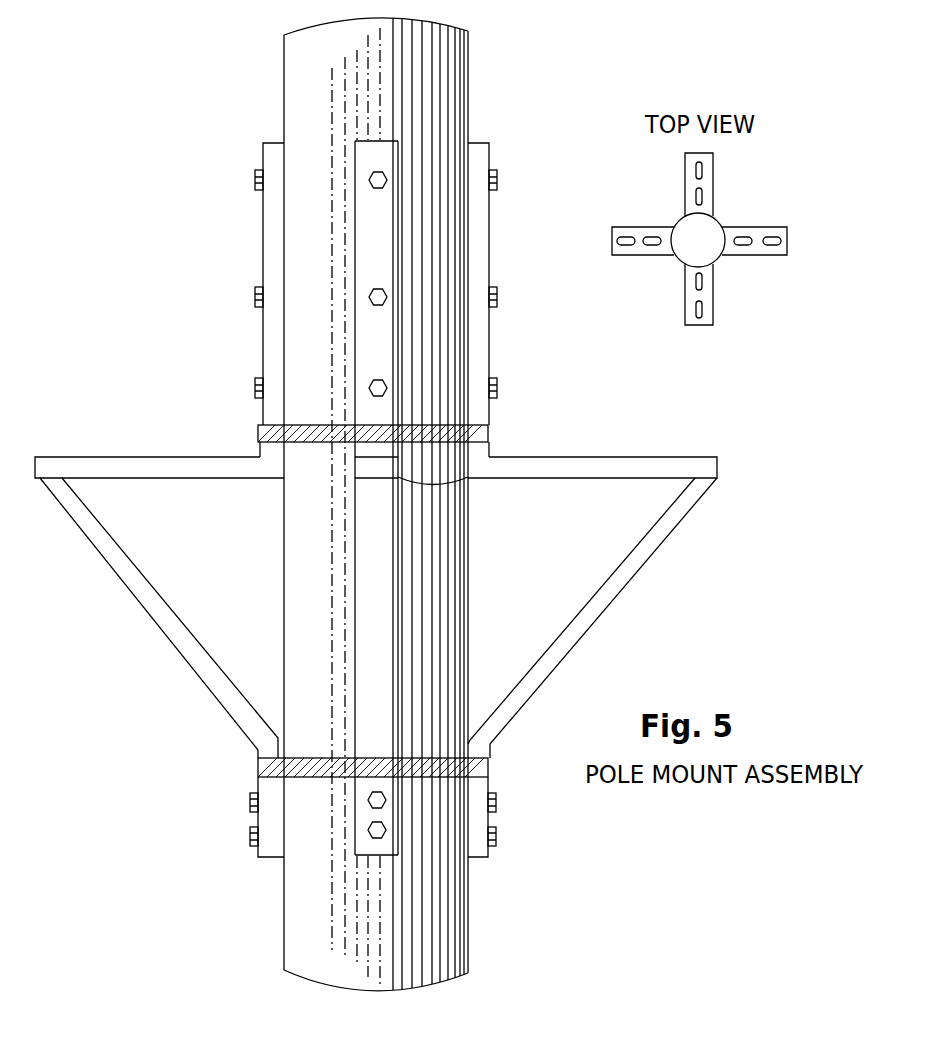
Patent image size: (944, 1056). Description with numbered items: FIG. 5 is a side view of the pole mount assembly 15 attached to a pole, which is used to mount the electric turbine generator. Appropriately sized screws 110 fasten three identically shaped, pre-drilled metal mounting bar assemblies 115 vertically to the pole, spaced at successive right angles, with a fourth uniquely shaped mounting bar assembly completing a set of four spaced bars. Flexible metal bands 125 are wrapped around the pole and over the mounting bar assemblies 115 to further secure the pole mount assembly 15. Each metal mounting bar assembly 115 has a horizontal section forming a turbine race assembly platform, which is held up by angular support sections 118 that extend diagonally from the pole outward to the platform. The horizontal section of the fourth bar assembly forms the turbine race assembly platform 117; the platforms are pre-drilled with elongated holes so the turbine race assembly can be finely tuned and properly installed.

The pole mount assembly 15 is at (538, 86).
The screws 110 is at (254, 180).
The metal mounting bar assemblies 115 is at (257, 150).
The turbine race assembly platform 117 is at (749, 231).
The angular support sections 118 is at (150, 618).
The flexible metal bands 125 is at (489, 430).